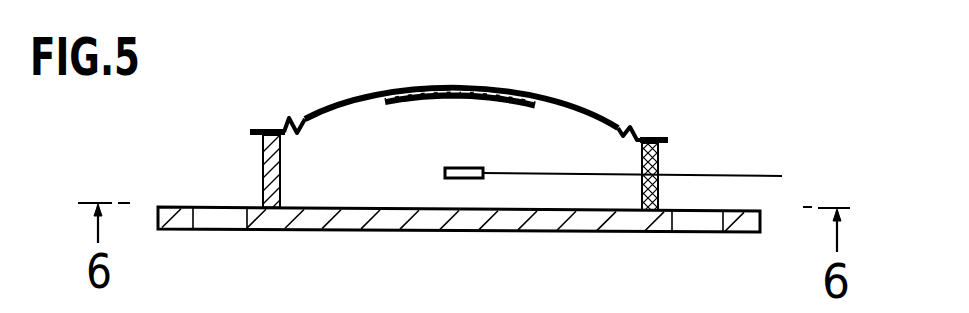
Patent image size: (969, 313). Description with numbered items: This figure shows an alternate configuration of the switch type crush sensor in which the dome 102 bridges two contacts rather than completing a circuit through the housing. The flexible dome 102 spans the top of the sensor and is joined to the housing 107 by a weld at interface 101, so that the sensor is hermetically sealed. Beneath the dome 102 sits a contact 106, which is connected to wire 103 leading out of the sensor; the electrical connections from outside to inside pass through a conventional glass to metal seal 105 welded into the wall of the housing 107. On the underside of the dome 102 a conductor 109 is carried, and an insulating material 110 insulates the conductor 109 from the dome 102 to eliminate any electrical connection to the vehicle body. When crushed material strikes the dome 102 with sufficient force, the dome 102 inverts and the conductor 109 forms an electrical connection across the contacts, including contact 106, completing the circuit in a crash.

The interface 101 is at (263, 129).
The dome 102 is at (580, 100).
The wire 103 is at (735, 176).
The glass to metal seal 105 is at (660, 163).
The contact 106 is at (543, 172).
The housing 107 is at (412, 233).
The conductor 109 is at (386, 106).
The insulating material 110 is at (490, 106).